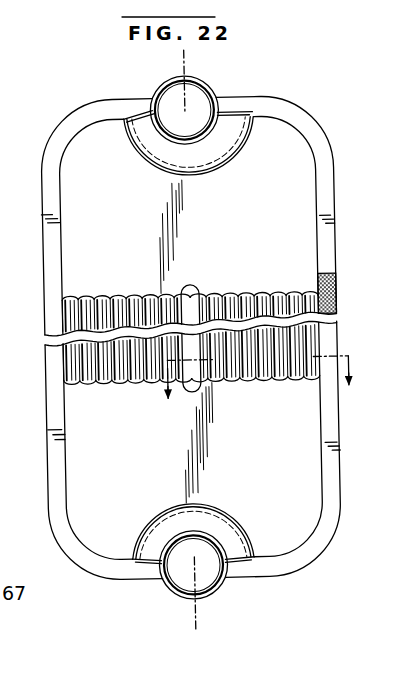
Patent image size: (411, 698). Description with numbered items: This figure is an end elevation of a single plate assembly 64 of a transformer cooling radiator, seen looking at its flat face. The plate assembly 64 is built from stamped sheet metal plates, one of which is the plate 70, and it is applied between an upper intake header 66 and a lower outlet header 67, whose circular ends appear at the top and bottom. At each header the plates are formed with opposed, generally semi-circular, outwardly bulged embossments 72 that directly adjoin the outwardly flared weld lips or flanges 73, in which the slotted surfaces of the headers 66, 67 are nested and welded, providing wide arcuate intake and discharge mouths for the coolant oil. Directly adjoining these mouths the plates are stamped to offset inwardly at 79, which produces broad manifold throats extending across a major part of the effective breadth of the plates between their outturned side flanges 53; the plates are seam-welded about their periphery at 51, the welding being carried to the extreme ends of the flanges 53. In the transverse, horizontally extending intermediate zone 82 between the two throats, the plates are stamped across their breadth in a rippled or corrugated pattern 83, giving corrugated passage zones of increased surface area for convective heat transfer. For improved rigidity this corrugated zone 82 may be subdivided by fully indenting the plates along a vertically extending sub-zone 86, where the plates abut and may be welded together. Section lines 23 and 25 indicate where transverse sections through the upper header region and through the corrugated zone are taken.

The section line 23- 23 is at (215, 60).
The section line 25- 25 is at (262, 371).
The peripheral seam weld 51 is at (339, 288).
The outturned flange 53 is at (330, 248).
The plate assembly 64 is at (315, 566).
The upper intake header 66 is at (220, 92).
The lower outlet header 67 is at (157, 586).
The stamped sheet metal plate 70 is at (298, 182).
The semi-circular outwardly bulged embossment 72 is at (169, 150).
The outwardly flared weld lip 73 is at (208, 138).
The inward offset 79 is at (301, 203).
The transverse corrugated zone 82 is at (123, 386).
The corrugated pattern 83 is at (119, 305).
The vertically extending sub-zone 86 is at (183, 390).